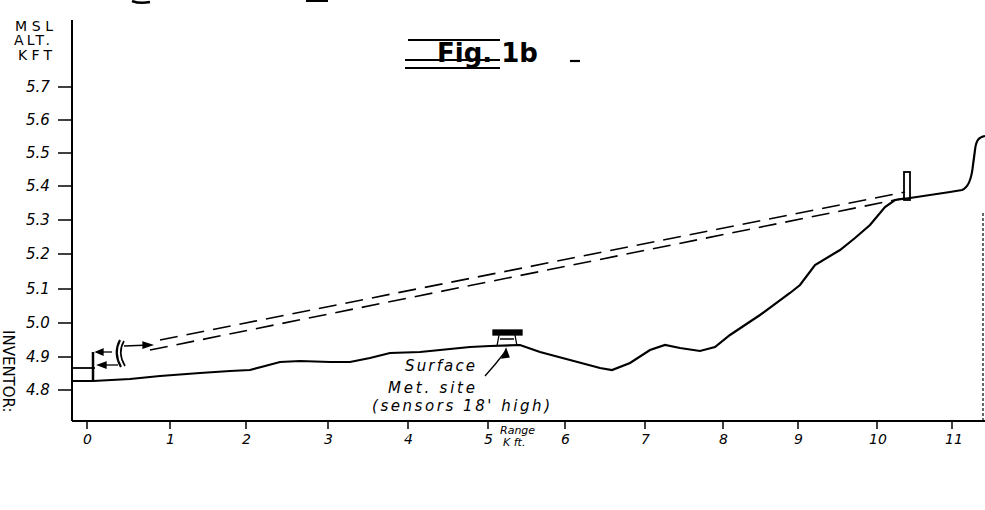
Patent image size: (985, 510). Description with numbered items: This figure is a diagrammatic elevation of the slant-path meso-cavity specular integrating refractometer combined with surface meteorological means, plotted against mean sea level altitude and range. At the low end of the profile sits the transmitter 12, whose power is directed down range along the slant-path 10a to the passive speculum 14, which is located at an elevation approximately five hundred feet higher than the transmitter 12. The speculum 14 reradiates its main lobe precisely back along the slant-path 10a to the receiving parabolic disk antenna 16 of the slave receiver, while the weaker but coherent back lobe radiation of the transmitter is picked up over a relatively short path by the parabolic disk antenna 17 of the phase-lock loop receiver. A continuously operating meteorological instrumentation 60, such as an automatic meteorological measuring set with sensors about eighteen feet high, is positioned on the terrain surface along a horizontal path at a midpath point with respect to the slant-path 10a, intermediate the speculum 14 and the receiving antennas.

The slant-path 10a is at (514, 264).
The transmitter 12 is at (130, 344).
The passive speculum 14 is at (903, 187).
The receiving parabolic disk antenna 16 is at (117, 340).
The parabolic disk antenna 17 is at (90, 351).
The meteorological instrumentation 60 is at (516, 333).